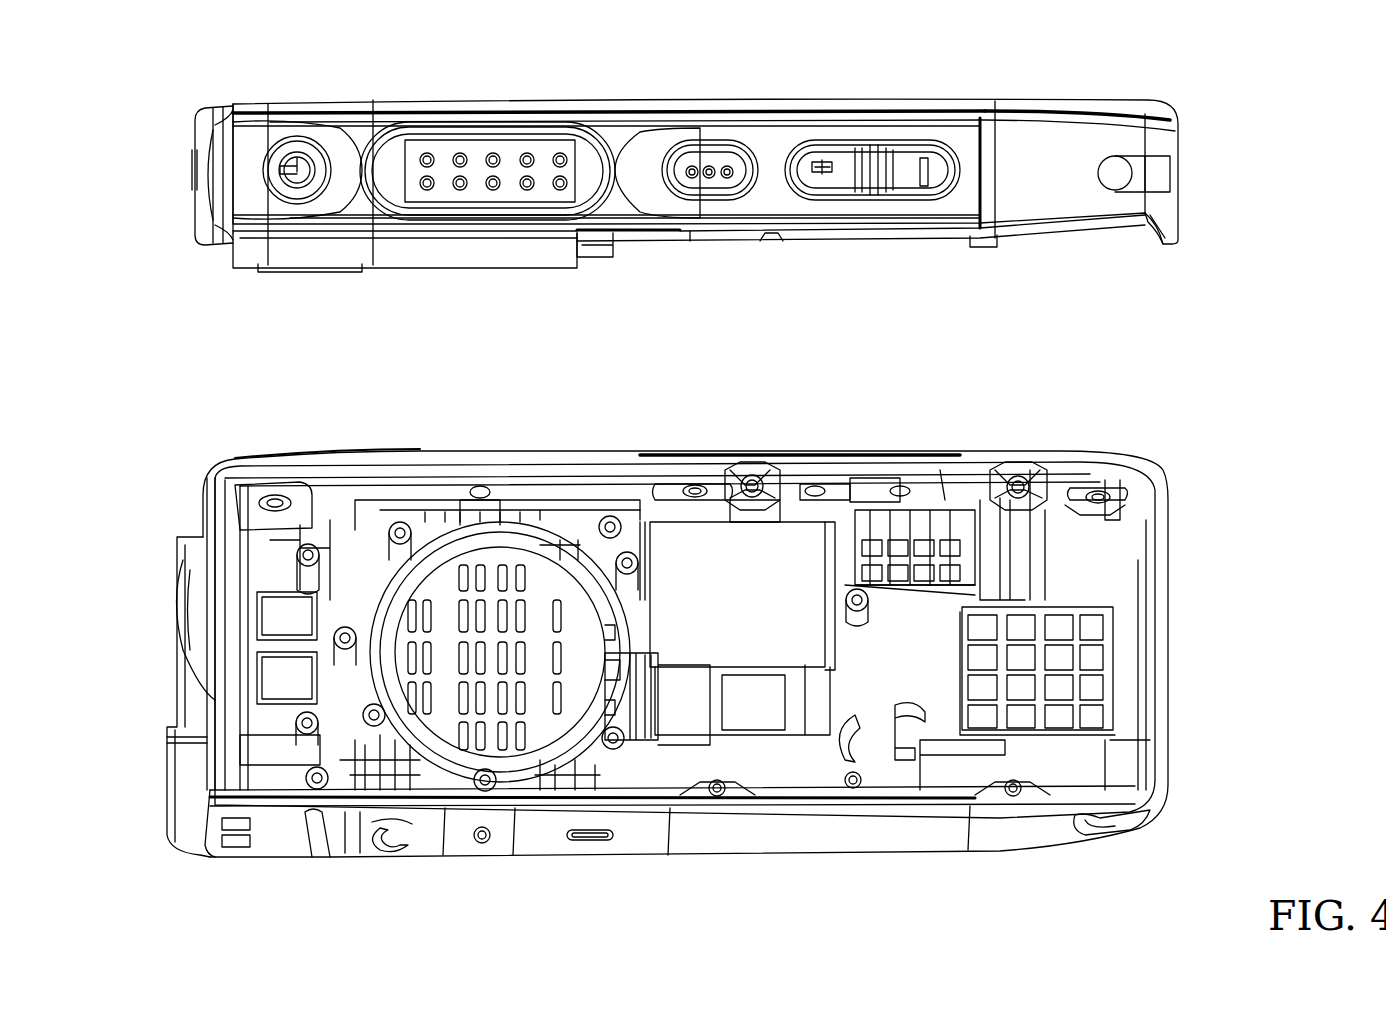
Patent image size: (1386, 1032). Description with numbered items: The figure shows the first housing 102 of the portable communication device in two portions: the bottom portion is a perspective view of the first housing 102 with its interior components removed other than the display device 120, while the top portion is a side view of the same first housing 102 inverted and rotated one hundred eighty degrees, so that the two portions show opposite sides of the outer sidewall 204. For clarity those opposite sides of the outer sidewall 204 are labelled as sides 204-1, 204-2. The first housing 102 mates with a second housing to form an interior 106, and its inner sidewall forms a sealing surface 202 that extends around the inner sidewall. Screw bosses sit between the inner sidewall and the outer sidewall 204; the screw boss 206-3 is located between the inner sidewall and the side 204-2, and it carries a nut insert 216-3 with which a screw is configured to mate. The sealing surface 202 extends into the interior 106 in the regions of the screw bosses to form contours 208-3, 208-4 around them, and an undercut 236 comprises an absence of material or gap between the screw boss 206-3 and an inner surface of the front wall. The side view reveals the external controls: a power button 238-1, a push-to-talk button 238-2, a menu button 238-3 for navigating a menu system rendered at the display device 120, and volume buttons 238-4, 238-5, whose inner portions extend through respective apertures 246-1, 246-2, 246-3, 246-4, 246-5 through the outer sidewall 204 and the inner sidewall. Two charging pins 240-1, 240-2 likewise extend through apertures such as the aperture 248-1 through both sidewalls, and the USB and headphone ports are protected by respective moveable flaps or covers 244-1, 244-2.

The first housing 102 is at (215, 110).
The interior 106 is at (811, 254).
The display device 120 is at (750, 617).
The sealing surface 202 is at (420, 475).
The outer sidewall 204 is at (540, 452).
The side of the outer sidewall 204-1 is at (283, 845).
The side of the outer sidewall 204-2 is at (437, 262).
The screw boss 206-3 is at (748, 465).
The contour 208-3 is at (705, 486).
The contour 208-4 is at (1022, 475).
The nut insert 216-3 is at (762, 486).
The undercut 236 is at (756, 525).
The power button 238-1 is at (297, 170).
The push-to-talk button 238-2 is at (473, 145).
The menu button 238-3 is at (708, 160).
The volume button 238-4 is at (838, 160).
The volume button 238-5 is at (910, 160).
The charging pin 240-1 is at (1115, 173).
The charging pin 240-2 is at (1100, 823).
The cover 244-1 is at (583, 845).
The cover 244-2 is at (420, 845).
The aperture 246-1 is at (270, 485).
The aperture 246-2 is at (462, 478).
The aperture 246-3 is at (680, 482).
The aperture 246-4 is at (833, 500).
The aperture 246-5 is at (880, 505).
The aperture 248-1 is at (1112, 512).